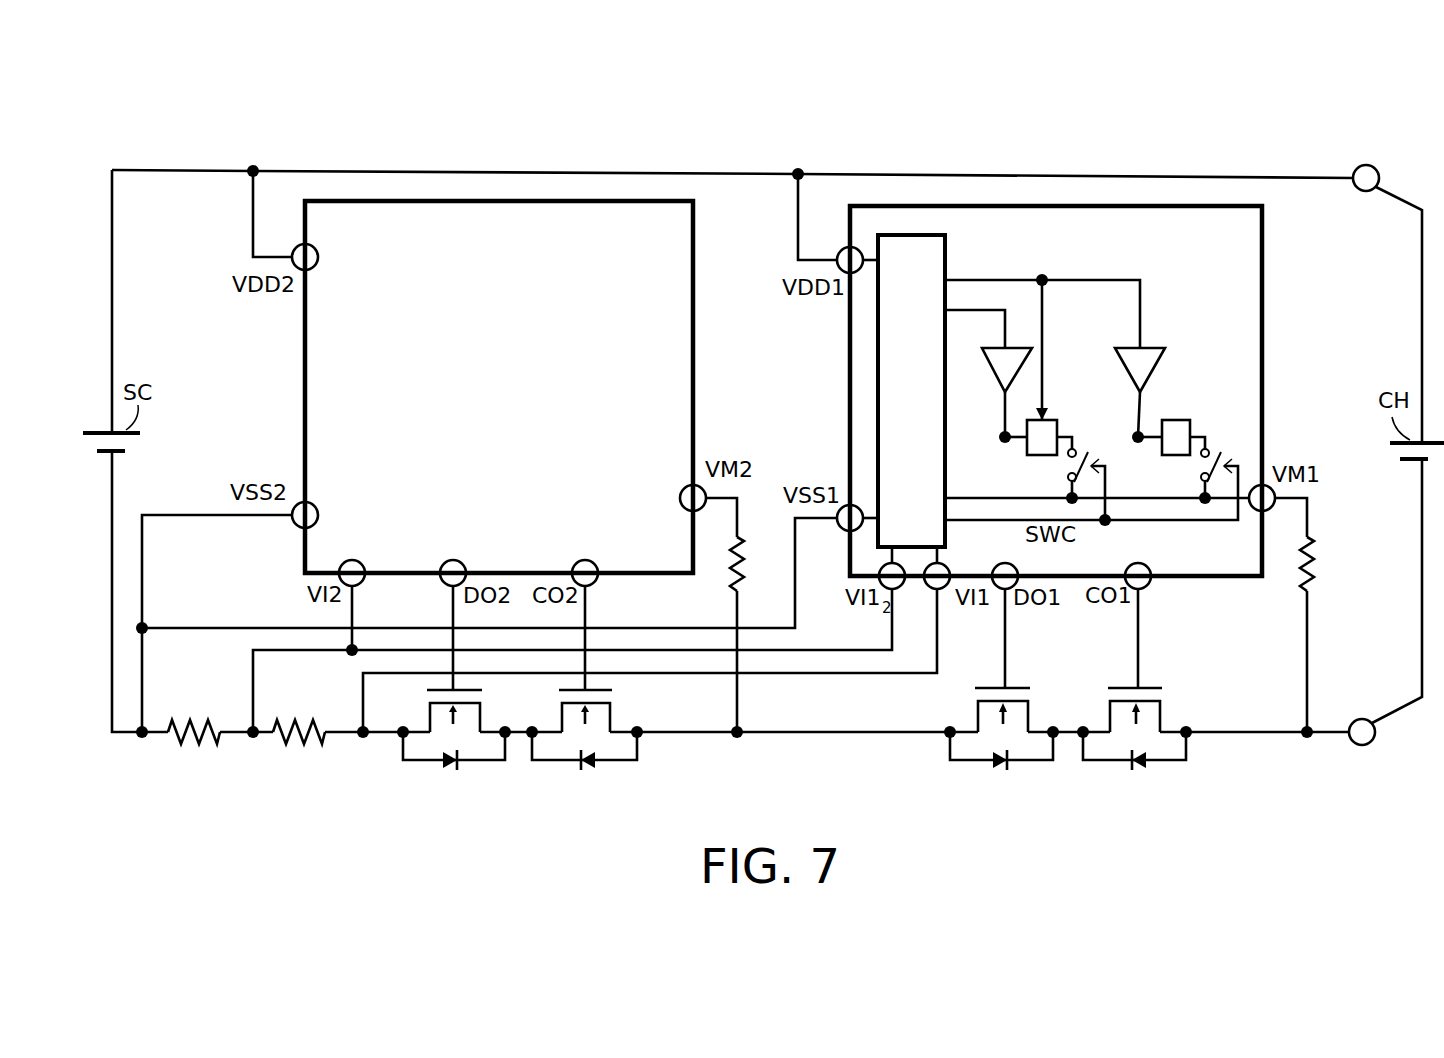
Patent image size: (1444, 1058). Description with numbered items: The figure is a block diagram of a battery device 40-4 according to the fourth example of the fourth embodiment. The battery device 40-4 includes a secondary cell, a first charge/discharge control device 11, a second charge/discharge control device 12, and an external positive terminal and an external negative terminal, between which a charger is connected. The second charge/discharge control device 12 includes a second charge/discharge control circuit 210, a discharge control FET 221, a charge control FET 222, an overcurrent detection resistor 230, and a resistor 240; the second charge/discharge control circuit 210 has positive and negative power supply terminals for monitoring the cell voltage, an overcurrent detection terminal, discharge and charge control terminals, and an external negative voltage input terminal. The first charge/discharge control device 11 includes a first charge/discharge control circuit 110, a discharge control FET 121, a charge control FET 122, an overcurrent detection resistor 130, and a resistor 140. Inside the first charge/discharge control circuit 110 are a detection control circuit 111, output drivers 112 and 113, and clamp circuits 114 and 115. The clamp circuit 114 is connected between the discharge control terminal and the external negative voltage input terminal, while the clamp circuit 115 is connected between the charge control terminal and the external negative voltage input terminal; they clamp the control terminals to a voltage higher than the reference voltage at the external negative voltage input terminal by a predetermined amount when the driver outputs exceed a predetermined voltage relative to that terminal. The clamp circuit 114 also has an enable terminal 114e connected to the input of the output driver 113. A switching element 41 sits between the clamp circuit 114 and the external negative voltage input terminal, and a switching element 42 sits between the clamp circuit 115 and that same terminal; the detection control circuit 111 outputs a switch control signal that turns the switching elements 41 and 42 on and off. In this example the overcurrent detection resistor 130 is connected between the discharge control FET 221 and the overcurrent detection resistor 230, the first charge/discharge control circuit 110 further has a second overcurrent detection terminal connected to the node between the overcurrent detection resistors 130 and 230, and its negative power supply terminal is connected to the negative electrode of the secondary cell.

The battery device 40-4 is at (1254, 93).
The second charge/discharge control device 12 is at (483, 152).
The first charge/discharge control device 11 is at (1037, 152).
The second charge/discharge control circuit 210 is at (568, 200).
The first charge/discharge control circuit 110 is at (1130, 205).
The detection control circuit 111 is at (948, 252).
The output driver 112 is at (996, 373).
The output driver 113 is at (1150, 350).
The clamp circuit 114 is at (1038, 440).
The enable terminal 114e is at (1050, 423).
The clamp circuit 115 is at (1174, 420).
The switching element 41 is at (1068, 469).
The switching element 42 is at (1201, 469).
The resistor 240 is at (730, 572).
The resistor 140 is at (1300, 575).
The overcurrent detection resistor 230 is at (214, 742).
The overcurrent detection resistor 130 is at (320, 742).
The discharge control FET 221 is at (483, 712).
The charge control FET 222 is at (615, 712).
The discharge control FET 121 is at (1033, 712).
The charge control FET 122 is at (1165, 712).